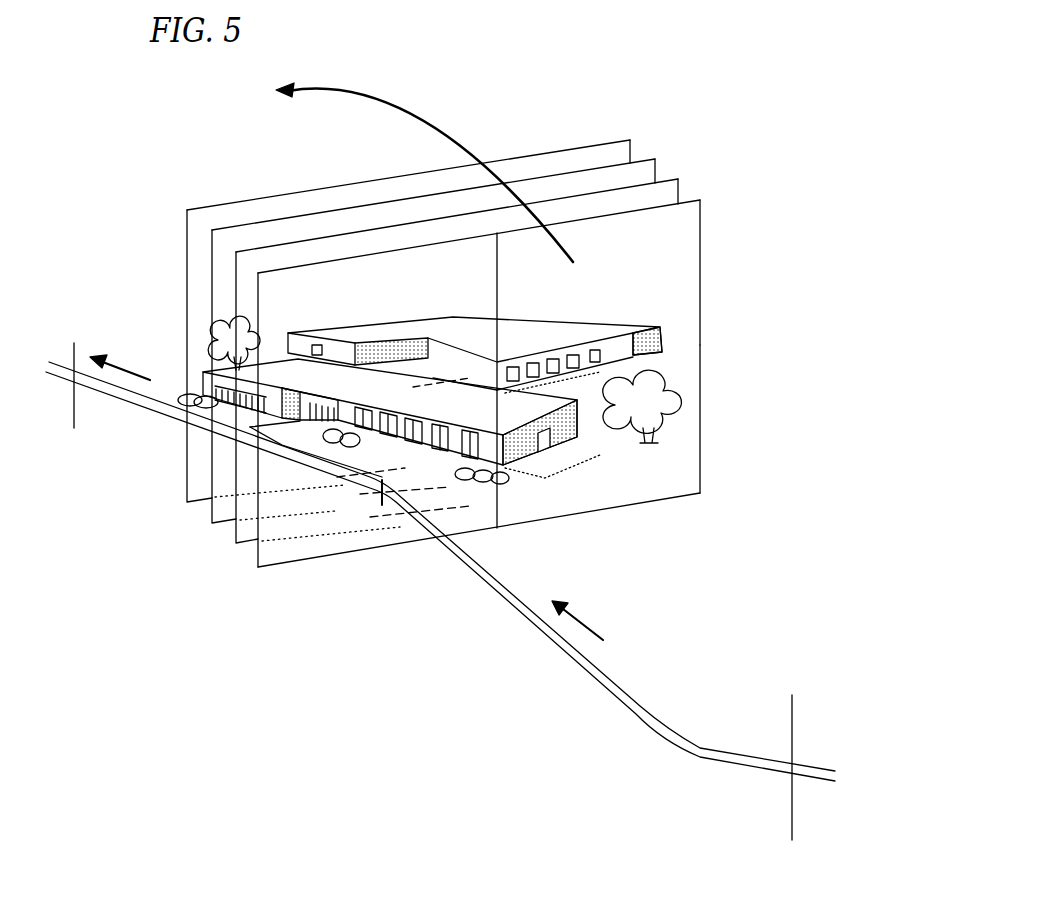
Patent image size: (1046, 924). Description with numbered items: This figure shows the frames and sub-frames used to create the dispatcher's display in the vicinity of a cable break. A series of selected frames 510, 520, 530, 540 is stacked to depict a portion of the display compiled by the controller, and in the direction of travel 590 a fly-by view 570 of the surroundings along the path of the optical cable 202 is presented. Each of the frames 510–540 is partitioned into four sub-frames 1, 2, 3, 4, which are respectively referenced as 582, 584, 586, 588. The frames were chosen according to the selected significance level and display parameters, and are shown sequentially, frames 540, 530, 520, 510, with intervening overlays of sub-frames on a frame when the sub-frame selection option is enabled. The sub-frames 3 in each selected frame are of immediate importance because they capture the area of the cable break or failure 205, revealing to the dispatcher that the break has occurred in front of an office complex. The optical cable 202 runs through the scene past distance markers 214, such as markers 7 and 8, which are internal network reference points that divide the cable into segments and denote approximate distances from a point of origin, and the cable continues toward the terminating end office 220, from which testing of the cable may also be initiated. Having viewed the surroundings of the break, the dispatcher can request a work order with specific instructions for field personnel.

The sub-frame 1 is at (657, 183).
The sub-frame 2 is at (232, 388).
The sub-frame 3 is at (235, 517).
The sub-frame 4 is at (687, 476).
The distance marker 7 is at (71, 441).
The distance marker 8 is at (790, 859).
The optical cable 202 is at (123, 399).
The cable break or failure 205 is at (390, 492).
The distance markers 214 is at (83, 310).
The terminating end office 220 is at (836, 776).
The frame 510 is at (188, 493).
The frame 520 is at (210, 522).
The frame 530 is at (235, 546).
The frame 540 is at (258, 568).
The fly-by view 570 is at (362, 98).
The sub-frame 582 is at (702, 210).
The sub-frame 584 is at (702, 473).
The sub-frame 586 is at (288, 563).
The sub-frame 588 is at (284, 280).
The direction of travel 590 is at (130, 362).